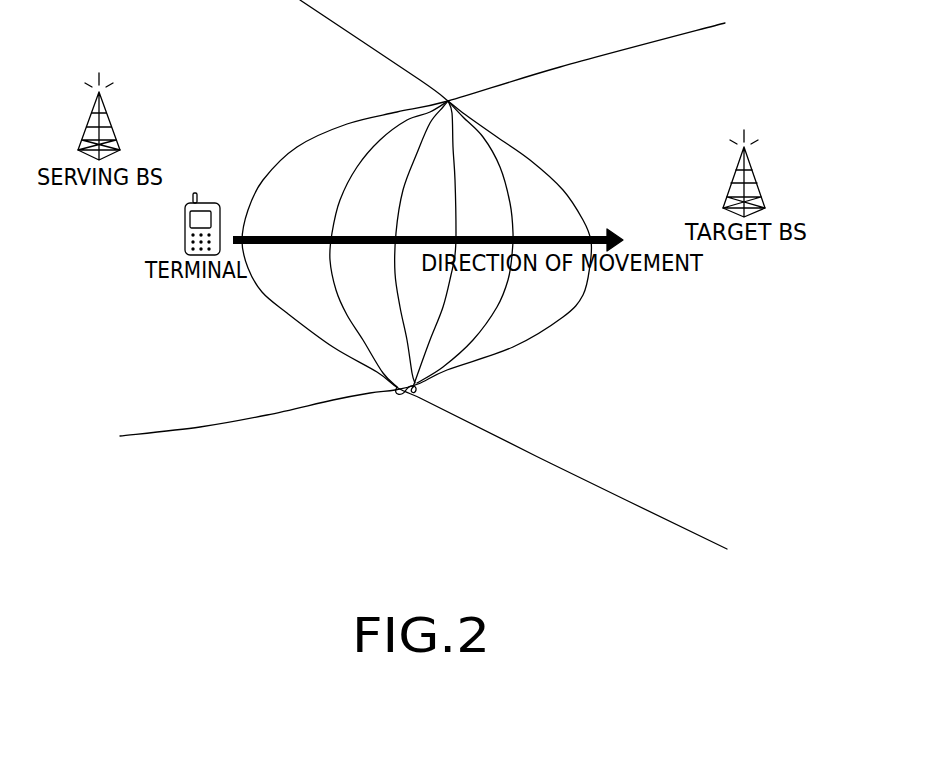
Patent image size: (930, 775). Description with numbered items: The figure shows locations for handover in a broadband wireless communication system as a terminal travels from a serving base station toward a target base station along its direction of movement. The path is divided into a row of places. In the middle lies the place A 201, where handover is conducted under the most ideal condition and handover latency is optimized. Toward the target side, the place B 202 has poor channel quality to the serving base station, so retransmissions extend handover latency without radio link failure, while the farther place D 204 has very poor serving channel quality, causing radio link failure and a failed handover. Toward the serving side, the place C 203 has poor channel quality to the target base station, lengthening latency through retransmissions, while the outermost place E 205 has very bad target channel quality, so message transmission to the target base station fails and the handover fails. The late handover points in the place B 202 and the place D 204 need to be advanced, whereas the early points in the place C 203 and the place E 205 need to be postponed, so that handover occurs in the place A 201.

The place A 201 is at (440, 186).
The place B 202 is at (475, 192).
The place C 203 is at (378, 192).
The place D 204 is at (528, 192).
The place E 205 is at (319, 192).